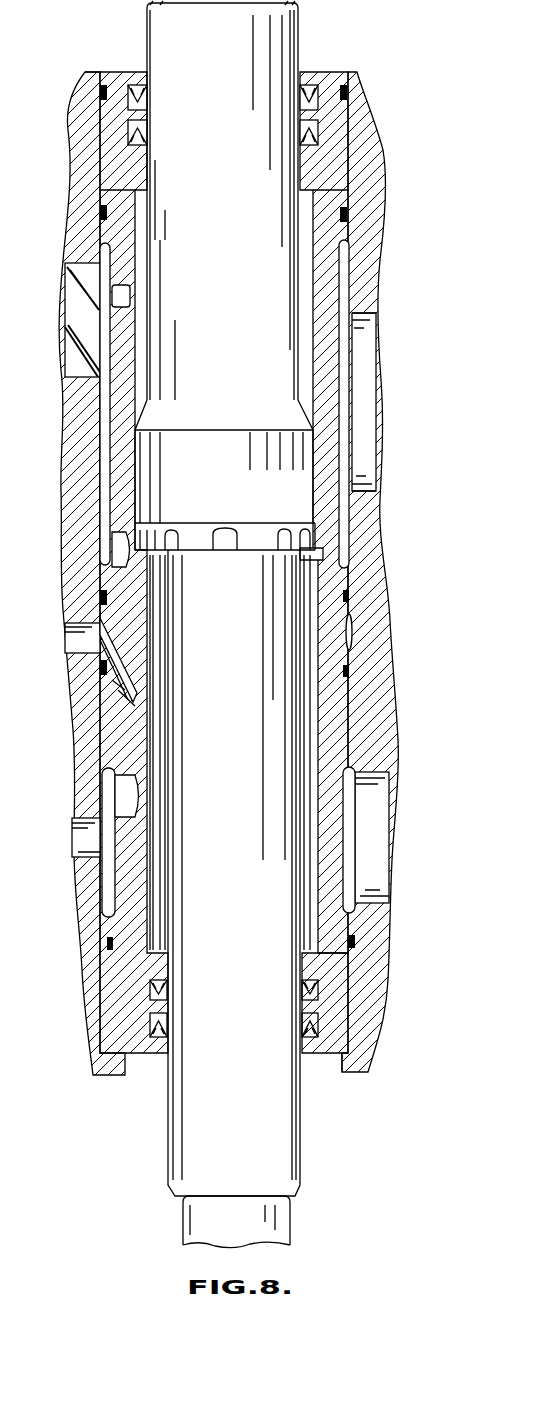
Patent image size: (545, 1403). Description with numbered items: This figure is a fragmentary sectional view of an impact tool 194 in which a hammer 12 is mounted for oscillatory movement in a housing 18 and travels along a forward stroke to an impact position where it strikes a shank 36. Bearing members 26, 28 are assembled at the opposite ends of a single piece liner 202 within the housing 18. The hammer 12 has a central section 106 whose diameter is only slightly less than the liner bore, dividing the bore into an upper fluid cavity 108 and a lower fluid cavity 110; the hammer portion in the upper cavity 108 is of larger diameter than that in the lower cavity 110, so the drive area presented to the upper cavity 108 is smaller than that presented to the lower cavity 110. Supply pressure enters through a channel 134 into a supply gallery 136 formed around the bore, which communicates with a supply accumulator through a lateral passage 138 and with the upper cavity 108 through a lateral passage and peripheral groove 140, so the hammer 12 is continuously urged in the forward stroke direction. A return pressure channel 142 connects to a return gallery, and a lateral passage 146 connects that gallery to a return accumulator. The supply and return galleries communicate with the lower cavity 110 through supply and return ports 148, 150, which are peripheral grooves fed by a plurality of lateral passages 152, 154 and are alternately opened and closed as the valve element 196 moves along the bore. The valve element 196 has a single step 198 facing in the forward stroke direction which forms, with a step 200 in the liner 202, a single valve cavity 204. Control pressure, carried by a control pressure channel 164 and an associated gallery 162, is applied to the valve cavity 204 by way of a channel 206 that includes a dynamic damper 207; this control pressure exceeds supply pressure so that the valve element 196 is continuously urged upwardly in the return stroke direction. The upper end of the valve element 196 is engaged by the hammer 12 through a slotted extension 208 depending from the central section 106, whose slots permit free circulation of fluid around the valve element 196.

The hammer 12 is at (285, 38).
The housing 18 is at (365, 170).
The bearing member 26 is at (333, 1037).
The bearing member 28 is at (323, 82).
The shank 36 is at (278, 1229).
The central section of the hammer 106 is at (155, 478).
The upper fluid cavity 108 is at (165, 358).
The lower fluid cavity 110 is at (170, 820).
The supply pressure channel 134 is at (70, 303).
The supply gallery 136 is at (343, 290).
The lateral passage 138 is at (373, 325).
The lateral passage and peripheral groove 140 is at (117, 292).
The return pressure channel 142 is at (82, 846).
The lateral passage 146 is at (352, 776).
The supply port 148 is at (350, 570).
The return port 150 is at (320, 790).
The lateral passages 152 is at (118, 550).
The lateral passages 154 is at (125, 797).
The gallery 162 is at (352, 632).
The control pressure channel 164 is at (72, 640).
The impact tool 194 is at (93, 60).
The valve element 196 is at (150, 636).
The step 198 is at (140, 660).
The step 200 is at (128, 742).
The single piece liner 202 is at (115, 712).
The valve cavity 204 is at (322, 706).
The channel 206 is at (130, 700).
The dynamic damper 207 is at (122, 690).
The slotted extension 208 is at (208, 552).